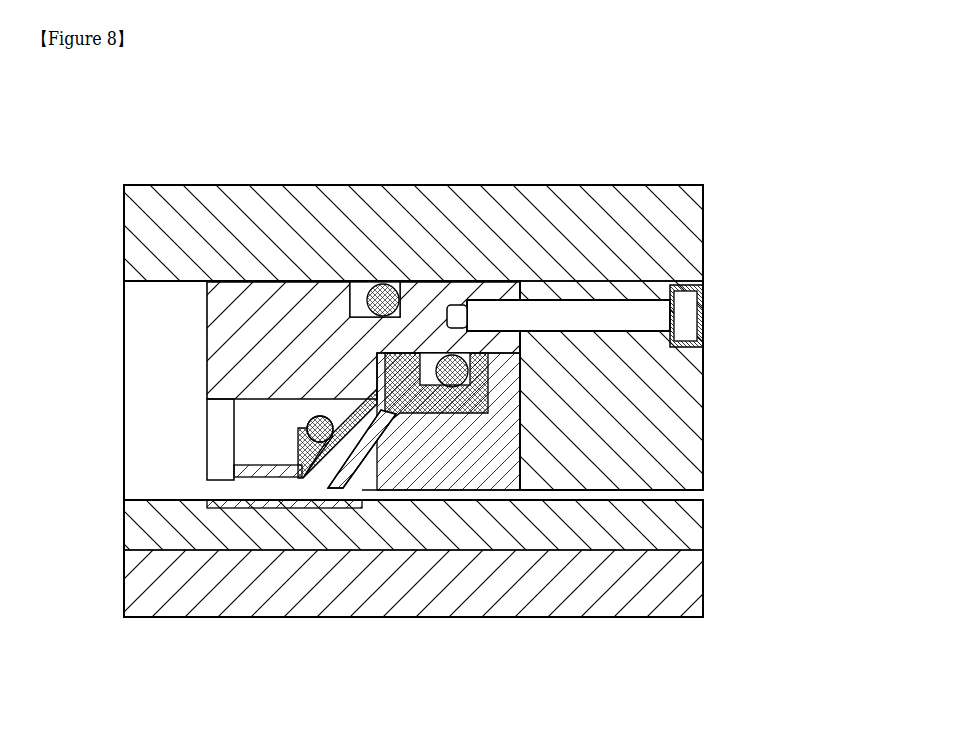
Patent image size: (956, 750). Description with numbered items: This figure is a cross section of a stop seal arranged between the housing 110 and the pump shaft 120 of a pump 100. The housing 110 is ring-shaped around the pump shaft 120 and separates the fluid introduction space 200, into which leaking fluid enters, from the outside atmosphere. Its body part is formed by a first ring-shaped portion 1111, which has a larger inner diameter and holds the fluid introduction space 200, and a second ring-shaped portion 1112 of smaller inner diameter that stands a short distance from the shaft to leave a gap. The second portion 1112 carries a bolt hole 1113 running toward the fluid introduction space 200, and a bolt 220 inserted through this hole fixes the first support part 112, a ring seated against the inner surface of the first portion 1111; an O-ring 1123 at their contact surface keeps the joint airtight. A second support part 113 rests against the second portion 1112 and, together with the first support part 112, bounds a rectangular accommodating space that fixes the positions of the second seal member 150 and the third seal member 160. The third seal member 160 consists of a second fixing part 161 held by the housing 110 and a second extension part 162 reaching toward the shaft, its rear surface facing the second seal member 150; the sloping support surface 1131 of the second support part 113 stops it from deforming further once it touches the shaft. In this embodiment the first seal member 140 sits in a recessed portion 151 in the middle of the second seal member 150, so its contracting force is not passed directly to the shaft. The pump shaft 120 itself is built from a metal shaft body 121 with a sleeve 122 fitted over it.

The pump 100 is at (708, 158).
The housing 110 is at (460, 316).
The first ring-shaped portion 1111 is at (480, 210).
The second ring-shaped portion 1112 is at (705, 418).
The bolt hole 1113 is at (576, 303).
The first support part 112 is at (363, 266).
The O-ring 1123 is at (385, 290).
The second support part 113 is at (391, 534).
The support surface 1131 is at (353, 485).
The pump shaft 120 is at (480, 558).
The shaft body 121 is at (451, 583).
The sleeve 122 is at (705, 527).
The first seal member 140 is at (234, 408).
The second seal member 150 is at (306, 428).
The recessed portion 151 is at (297, 440).
The third seal member 160 is at (362, 534).
The second fixing part 161 is at (440, 400).
The second extension part 162 is at (373, 450).
The fluid introduction space 200 is at (159, 341).
The bolt 220 is at (705, 320).